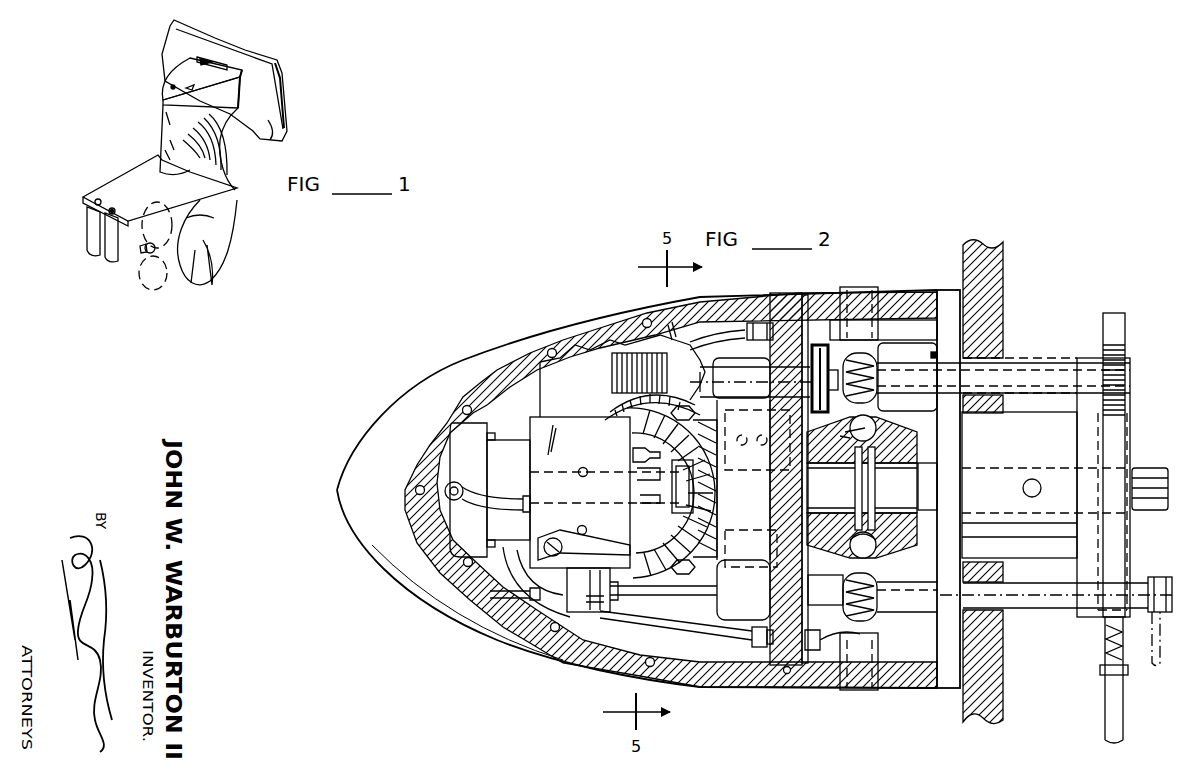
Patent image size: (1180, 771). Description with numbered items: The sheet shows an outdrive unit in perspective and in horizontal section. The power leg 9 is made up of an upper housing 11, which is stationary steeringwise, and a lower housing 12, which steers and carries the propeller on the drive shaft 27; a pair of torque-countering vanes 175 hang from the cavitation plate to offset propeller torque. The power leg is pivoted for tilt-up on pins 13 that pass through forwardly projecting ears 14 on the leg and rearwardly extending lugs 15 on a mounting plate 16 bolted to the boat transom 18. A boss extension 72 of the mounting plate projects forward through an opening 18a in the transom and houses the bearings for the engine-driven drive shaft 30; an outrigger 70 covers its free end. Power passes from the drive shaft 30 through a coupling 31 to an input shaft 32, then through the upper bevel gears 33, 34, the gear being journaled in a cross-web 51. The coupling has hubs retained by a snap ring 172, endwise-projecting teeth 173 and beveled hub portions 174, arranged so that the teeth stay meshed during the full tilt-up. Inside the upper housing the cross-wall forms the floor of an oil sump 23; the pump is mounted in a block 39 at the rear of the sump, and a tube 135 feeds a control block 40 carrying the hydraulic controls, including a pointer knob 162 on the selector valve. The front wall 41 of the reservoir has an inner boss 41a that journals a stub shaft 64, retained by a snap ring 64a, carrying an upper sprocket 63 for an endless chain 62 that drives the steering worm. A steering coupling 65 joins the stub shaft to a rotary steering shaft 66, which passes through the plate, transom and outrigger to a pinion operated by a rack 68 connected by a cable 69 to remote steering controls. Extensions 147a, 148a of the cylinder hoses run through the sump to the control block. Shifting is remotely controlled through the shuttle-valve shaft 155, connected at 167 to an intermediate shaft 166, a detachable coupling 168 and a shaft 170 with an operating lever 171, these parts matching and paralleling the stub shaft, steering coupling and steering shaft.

In FIG. 1, the power leg 9 is at (150, 144).
In FIG. 1, the upper housing 11 is at (162, 108).
In FIG. 2, the upper housing 11 is at (640, 300).
In FIG. 1, the lower housing 12 is at (232, 188).
In FIG. 2, the pins 13 is at (878, 288).
In FIG. 2, the forwardly projecting ears 14 is at (908, 298).
In FIG. 2, the rearwardly extending lugs 15 is at (920, 330).
In FIG. 2, the mounting plate 16 is at (935, 690).
In FIG. 1, the transom 18 is at (293, 122).
In FIG. 2, the transom 18 is at (995, 660).
In FIG. 2, the opening in the transom 18a is at (1004, 572).
In FIG. 2, the oil sump 23 is at (520, 402).
In FIG. 1, the drive shaft for the propeller 27 is at (143, 250).
In FIG. 2, the drive shaft 30 is at (1155, 472).
In FIG. 2, the coupling 31 is at (912, 434).
In FIG. 2, the input shaft 32 is at (832, 491).
In FIG. 2, the upper bevel gear (pinion) 33 is at (728, 508).
In FIG. 2, the upper bevel gear 34 is at (666, 548).
In FIG. 2, the block 39 is at (477, 467).
In FIG. 2, the control block 40 is at (598, 439).
In FIG. 2, the front wall 41 is at (800, 566).
In FIG. 2, the inner boss 41a is at (752, 607).
In FIG. 2, the cross-web 51 is at (566, 394).
In FIG. 2, the endless chain 62 is at (810, 370).
In FIG. 2, the upper sprocket 63 is at (848, 432).
In FIG. 2, the stub shaft 64 is at (825, 385).
In FIG. 2, the snap ring 64a is at (741, 378).
In FIG. 2, the steering coupling 65 is at (879, 360).
In FIG. 2, the rotary steering shaft 66 is at (1034, 372).
In FIG. 2, the rack 68 is at (1103, 321).
In FIG. 2, the cable 69 is at (1105, 703).
In FIG. 2, the outrigger 70 is at (1080, 401).
In FIG. 2, the boss extension 72 is at (1018, 450).
In FIG. 2, the tube 135 is at (476, 503).
In FIG. 2, the extension of hydraulic line 147a is at (750, 330).
In FIG. 2, the extension of hydraulic line 148a is at (715, 630).
In FIG. 2, the shaft 155 is at (645, 605).
In FIG. 2, the pointer knob 162 is at (570, 532).
In FIG. 2, the intermediate shaft 166 is at (838, 597).
In FIG. 2, the connection 167 is at (703, 598).
In FIG. 2, the detachable coupling 168 is at (880, 624).
In FIG. 2, the shaft 170 is at (1043, 612).
In FIG. 2, the operating lever 171 is at (1155, 576).
In FIG. 2, the snap ring 172 is at (873, 430).
In FIG. 2, the teeth 173 is at (871, 553).
In FIG. 2, the beveled hub portions 174 is at (893, 548).
In FIG. 1, the torque-countering vanes 175 is at (112, 262).